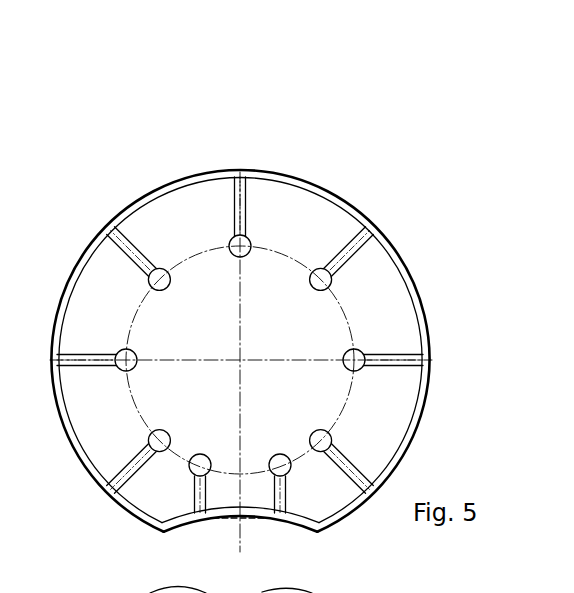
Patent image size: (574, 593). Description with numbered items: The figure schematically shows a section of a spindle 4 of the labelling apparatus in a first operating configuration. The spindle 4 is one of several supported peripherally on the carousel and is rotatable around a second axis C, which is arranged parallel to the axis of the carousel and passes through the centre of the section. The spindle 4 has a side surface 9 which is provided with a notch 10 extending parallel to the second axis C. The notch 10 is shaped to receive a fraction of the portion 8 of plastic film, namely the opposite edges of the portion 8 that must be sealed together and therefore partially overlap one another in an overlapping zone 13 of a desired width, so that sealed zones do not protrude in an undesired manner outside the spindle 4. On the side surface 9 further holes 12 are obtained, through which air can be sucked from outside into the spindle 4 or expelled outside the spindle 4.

The spindle 4 is at (421, 139).
The portion of plastic film 8 is at (128, 203).
The side surface 9 is at (176, 190).
The notch 10 is at (183, 518).
The further holes 12 is at (123, 246).
The overlapping zone 13 is at (287, 552).
The second axis C is at (240, 356).